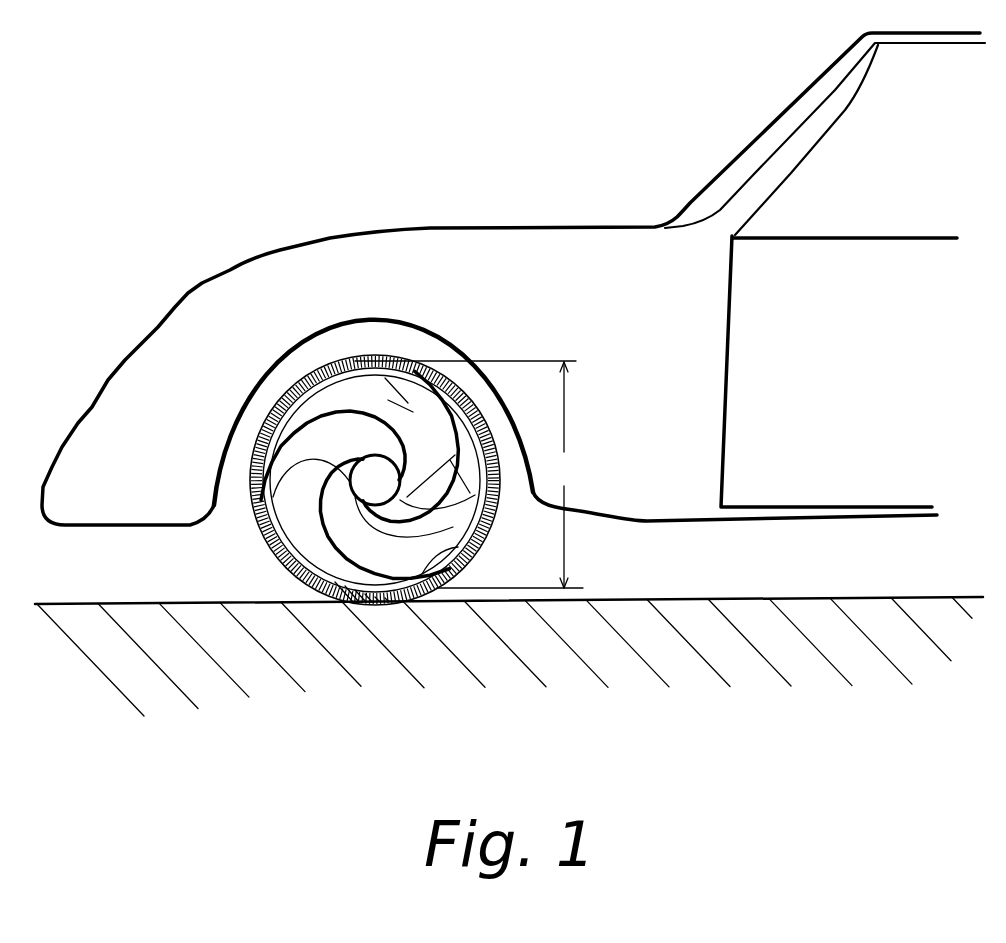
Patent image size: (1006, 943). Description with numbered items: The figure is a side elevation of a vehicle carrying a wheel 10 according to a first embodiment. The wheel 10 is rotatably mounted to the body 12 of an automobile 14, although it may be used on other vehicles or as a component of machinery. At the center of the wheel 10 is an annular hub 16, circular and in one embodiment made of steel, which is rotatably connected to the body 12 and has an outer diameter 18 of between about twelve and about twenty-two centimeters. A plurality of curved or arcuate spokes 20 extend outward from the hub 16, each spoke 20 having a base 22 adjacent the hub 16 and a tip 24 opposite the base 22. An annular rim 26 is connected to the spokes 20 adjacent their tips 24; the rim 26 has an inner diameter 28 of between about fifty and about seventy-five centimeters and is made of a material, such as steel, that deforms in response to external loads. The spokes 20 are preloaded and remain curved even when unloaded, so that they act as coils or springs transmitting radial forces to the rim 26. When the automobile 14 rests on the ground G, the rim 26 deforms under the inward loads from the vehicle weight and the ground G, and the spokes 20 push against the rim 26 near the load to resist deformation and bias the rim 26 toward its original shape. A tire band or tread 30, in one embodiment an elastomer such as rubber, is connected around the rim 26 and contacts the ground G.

The wheel 10 is at (440, 341).
The body 12 is at (462, 224).
The automobile 14 is at (206, 176).
The annular hub 16 is at (483, 522).
The outer diameter 18 is at (367, 450).
The spokes 20 is at (495, 498).
The base 22 is at (262, 505).
The tip 24 is at (472, 561).
The annular rim 26 is at (280, 397).
The inner diameter 28 is at (469, 474).
The tire band or tread 30 is at (258, 526).
The ground G is at (674, 598).